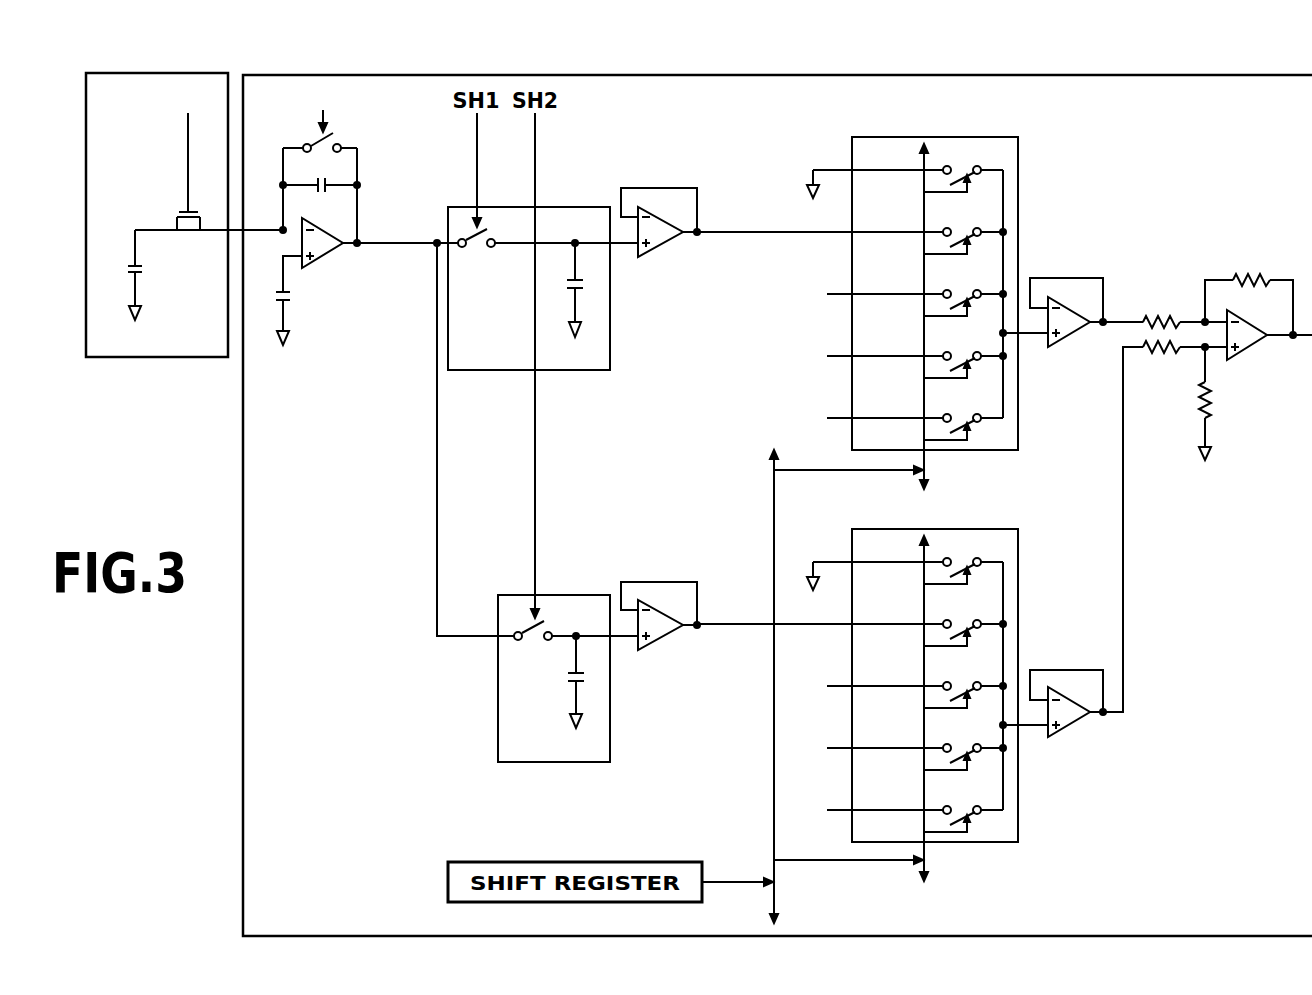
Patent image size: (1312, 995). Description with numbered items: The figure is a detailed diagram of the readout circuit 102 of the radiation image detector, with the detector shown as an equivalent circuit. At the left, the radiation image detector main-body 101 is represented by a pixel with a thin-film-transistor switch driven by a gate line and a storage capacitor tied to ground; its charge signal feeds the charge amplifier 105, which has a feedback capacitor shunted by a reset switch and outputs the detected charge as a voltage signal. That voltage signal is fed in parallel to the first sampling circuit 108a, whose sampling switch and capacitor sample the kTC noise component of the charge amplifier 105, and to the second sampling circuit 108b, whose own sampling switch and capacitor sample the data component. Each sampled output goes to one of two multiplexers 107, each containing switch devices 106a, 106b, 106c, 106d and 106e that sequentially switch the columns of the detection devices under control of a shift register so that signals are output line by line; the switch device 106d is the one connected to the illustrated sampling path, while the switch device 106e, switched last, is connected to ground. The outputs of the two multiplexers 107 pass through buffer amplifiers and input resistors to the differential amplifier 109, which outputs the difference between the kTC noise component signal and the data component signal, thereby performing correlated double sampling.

The radiation image detector main-body 101 is at (158, 357).
The readout circuit 102 is at (242, 452).
The charge amplifier 105 is at (322, 267).
The switch device 106a is at (965, 428).
The switch device 106b is at (965, 366).
The switch device 106c is at (965, 304).
The switch device 106d is at (965, 242).
The switch device 106e is at (963, 156).
The multiplexer 107 is at (1020, 152).
The first sampling circuit 108a is at (610, 323).
The second sampling circuit 108b is at (610, 720).
The differential amplifier 109 is at (1253, 345).